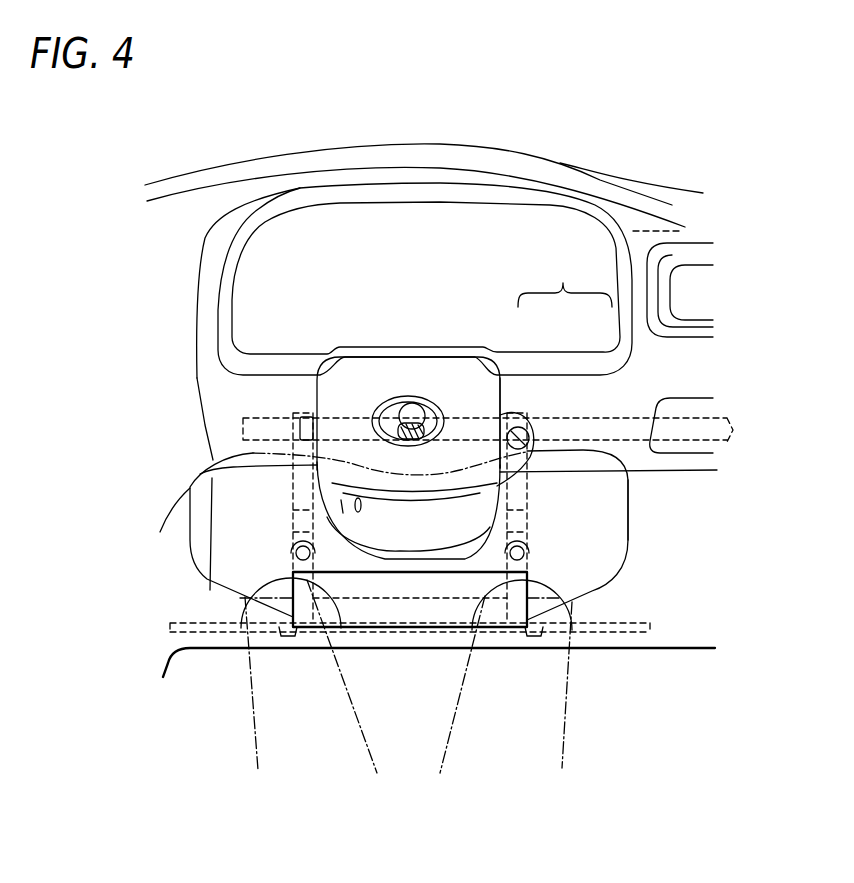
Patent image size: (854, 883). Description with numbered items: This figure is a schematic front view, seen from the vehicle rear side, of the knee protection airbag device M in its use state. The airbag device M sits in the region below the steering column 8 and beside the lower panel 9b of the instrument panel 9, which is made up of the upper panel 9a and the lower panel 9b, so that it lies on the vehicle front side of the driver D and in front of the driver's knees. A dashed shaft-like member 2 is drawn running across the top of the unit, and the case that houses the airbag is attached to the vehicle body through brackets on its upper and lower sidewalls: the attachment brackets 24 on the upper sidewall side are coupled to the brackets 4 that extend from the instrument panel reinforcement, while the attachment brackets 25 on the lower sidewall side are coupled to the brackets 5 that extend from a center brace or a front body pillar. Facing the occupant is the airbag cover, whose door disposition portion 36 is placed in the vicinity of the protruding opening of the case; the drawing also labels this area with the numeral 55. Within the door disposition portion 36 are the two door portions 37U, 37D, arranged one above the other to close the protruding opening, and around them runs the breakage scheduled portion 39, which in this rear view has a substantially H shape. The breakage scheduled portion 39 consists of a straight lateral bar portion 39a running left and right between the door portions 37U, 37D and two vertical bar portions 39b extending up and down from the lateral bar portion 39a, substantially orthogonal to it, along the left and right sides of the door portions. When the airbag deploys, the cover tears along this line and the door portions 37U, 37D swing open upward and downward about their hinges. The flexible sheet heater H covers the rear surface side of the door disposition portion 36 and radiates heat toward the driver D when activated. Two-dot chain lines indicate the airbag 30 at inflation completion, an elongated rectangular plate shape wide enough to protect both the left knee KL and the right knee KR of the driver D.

The steering column 8 is at (389, 350).
The instrument panel 9 is at (565, 282).
The upper panel 9a is at (528, 390).
The lower panel 9b is at (567, 488).
The shaft member (vehicle body member 1) 2 is at (270, 417).
The airbag 30 is at (628, 507).
The knee protection airbag device M is at (585, 567).
The brackets 4 is at (293, 513).
The attachment brackets 24 is at (296, 555).
The door disposition portion 36 is at (398, 624).
The breakage scheduled portion 39 is at (325, 607).
The lateral bar portion 39a is at (404, 572).
The vertical bar portions 39b is at (333, 598).
The door portion 37U is at (437, 572).
The door portion 37D is at (440, 585).
The fixing member 55 is at (360, 615).
The heater H is at (497, 622).
The brackets 5 is at (183, 647).
The attachment brackets 25 is at (283, 632).
The left knee KL is at (255, 673).
The right knee KR is at (563, 673).
The driver D is at (250, 768).